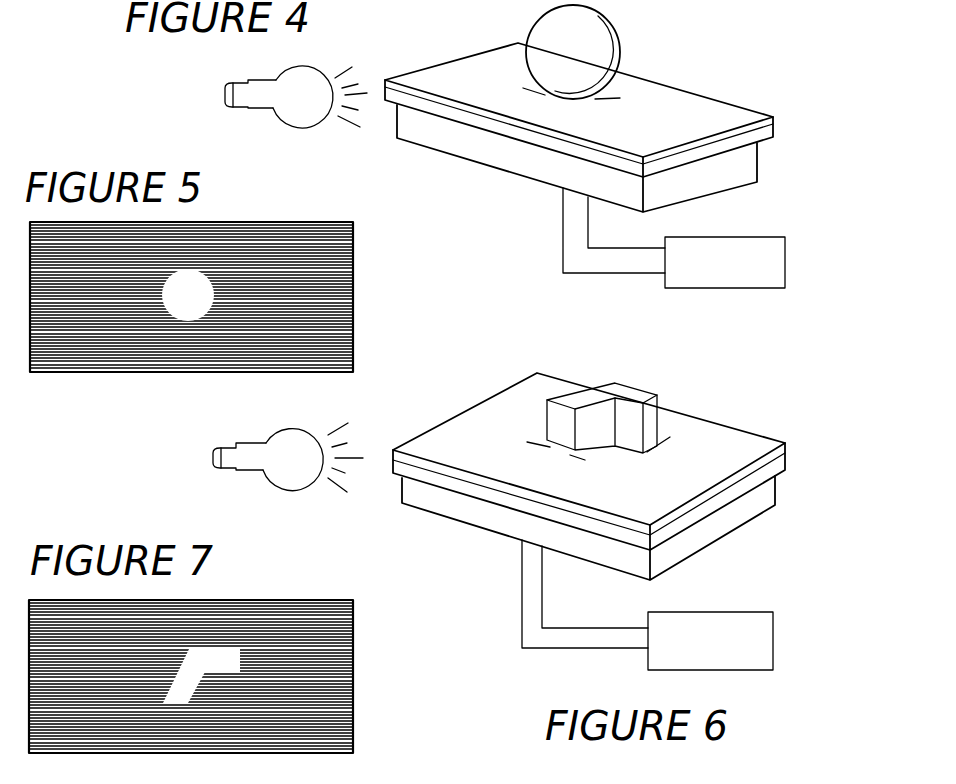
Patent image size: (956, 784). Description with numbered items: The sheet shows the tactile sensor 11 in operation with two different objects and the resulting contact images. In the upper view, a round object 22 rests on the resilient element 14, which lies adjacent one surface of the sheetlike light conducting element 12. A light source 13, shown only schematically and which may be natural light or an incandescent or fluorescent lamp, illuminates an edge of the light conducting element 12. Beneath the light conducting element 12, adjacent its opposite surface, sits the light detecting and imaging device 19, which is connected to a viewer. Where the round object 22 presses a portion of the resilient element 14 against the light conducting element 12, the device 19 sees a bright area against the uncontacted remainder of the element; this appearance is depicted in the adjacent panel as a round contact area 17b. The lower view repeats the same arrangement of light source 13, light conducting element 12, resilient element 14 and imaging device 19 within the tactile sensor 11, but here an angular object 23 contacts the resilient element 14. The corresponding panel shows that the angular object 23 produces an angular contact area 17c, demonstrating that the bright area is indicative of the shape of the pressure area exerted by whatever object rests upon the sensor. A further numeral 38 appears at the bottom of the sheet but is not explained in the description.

In FIG. 4, the tactile sensor 11 is at (592, 155).
In FIG. 6, the tactile sensor 11 is at (565, 511).
In FIG. 4, the light conducting element 12 is at (523, 135).
In FIG. 6, the light conducting element 12 is at (400, 473).
In FIG. 4, the light source 13 is at (285, 72).
In FIG. 6, the light source 13 is at (278, 432).
In FIG. 4, the resilient element 14 is at (728, 113).
In FIG. 6, the resilient element 14 is at (472, 420).
In FIG. 5, the round contact area 17b is at (200, 309).
In FIG. 7, the angular contact area 17c is at (204, 668).
In FIG. 4, the light detecting and imaging device 19 is at (543, 163).
In FIG. 6, the light detecting and imaging device 19 is at (705, 530).
In FIG. 4, the round object 22 is at (600, 58).
In FIG. 6, the angular object 23 is at (632, 393).
In FIG. 7, the image pattern 38 is at (118, 783).